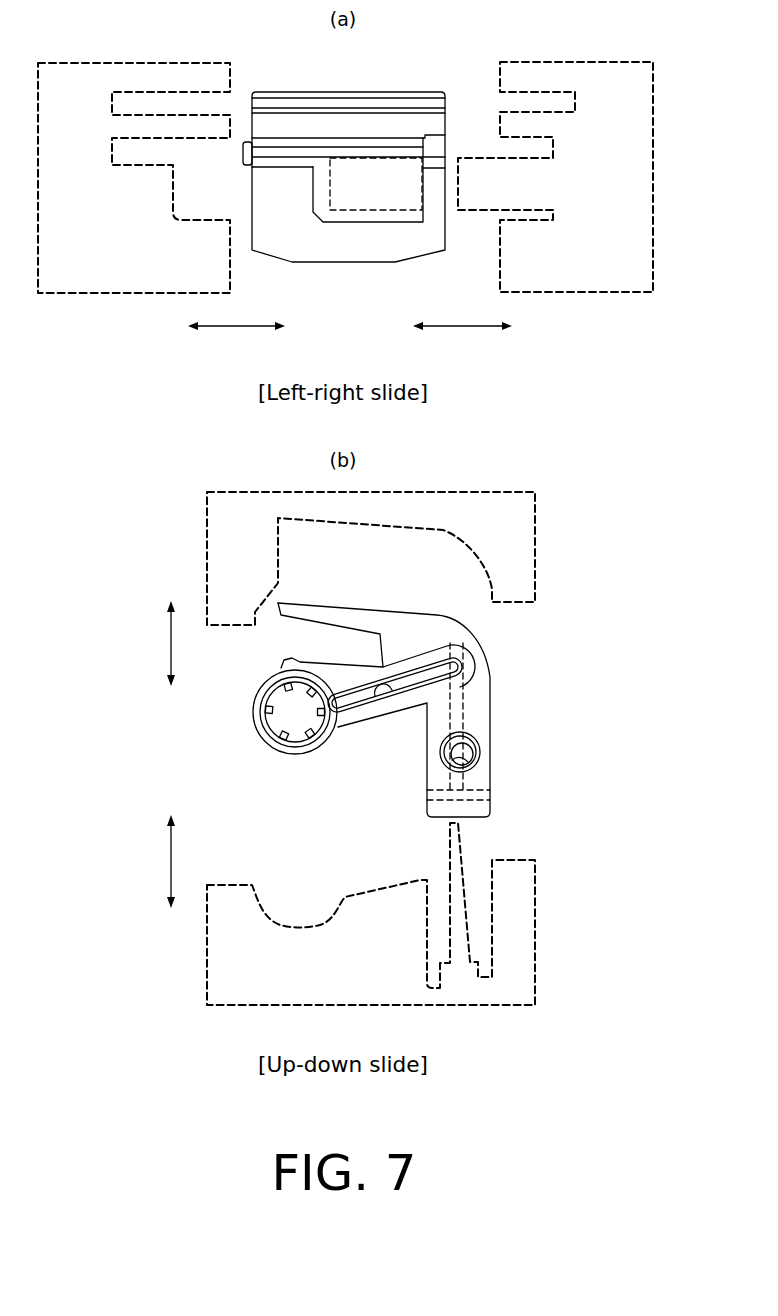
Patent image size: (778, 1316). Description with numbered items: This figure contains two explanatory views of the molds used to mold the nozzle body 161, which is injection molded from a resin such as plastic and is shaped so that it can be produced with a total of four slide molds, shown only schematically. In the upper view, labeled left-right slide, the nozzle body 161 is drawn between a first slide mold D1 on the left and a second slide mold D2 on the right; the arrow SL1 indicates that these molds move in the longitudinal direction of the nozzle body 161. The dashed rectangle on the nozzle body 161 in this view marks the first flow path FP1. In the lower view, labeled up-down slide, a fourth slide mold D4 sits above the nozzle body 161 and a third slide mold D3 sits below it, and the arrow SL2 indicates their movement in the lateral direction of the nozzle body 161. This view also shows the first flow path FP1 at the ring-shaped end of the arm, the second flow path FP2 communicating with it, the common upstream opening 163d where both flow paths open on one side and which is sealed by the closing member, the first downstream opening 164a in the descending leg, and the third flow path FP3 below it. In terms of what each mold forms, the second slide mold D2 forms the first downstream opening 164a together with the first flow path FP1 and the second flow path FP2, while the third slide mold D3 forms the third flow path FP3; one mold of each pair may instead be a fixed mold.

The nozzle body 161 is at (356, 90).
The upstream opening 163d is at (419, 664).
The first downstream opening 164a is at (480, 752).
The first flow path FP1 is at (373, 198).
The second flow path FP2 is at (375, 697).
The third flow path FP3 is at (468, 811).
The first slide mold D1 is at (118, 293).
The second slide mold D2 is at (572, 292).
The third slide mold D3 is at (207, 947).
The fourth slide mold D4 is at (207, 549).
The arrow SL1 is at (350, 339).
The arrow SL2 is at (151, 754).